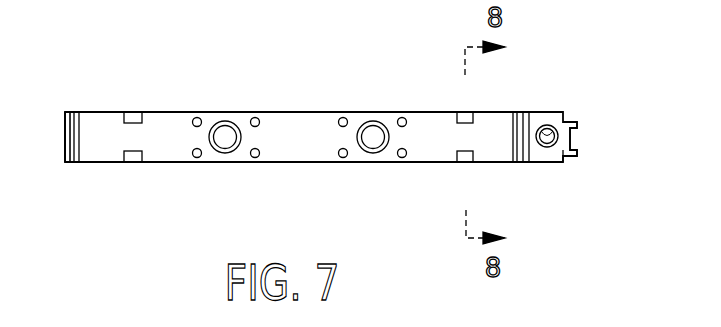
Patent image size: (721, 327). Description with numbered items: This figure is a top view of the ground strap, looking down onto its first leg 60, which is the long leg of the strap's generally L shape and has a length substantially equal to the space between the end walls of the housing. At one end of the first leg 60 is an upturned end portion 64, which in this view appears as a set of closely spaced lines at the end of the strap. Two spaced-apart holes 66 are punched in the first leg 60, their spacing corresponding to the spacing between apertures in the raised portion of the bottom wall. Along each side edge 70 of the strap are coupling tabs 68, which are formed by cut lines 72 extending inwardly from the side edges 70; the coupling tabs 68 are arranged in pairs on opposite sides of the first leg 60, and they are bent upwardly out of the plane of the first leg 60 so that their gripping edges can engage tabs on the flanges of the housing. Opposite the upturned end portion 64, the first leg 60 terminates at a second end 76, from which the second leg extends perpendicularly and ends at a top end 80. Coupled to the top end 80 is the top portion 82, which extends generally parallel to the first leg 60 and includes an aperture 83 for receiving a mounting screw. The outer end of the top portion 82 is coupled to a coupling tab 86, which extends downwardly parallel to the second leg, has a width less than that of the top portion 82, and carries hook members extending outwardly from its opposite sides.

The first leg 60 is at (88, 163).
The upturned end portion 64 is at (65, 118).
The holes 66 is at (226, 153).
The coupling tabs 68 is at (133, 112).
The side edge 70 is at (280, 112).
The cut lines 72 is at (124, 117).
The second end 76 is at (517, 170).
The top end 80 is at (571, 163).
The top portion 82 is at (548, 125).
The aperture 83 is at (545, 112).
The coupling tab 86 is at (580, 137).